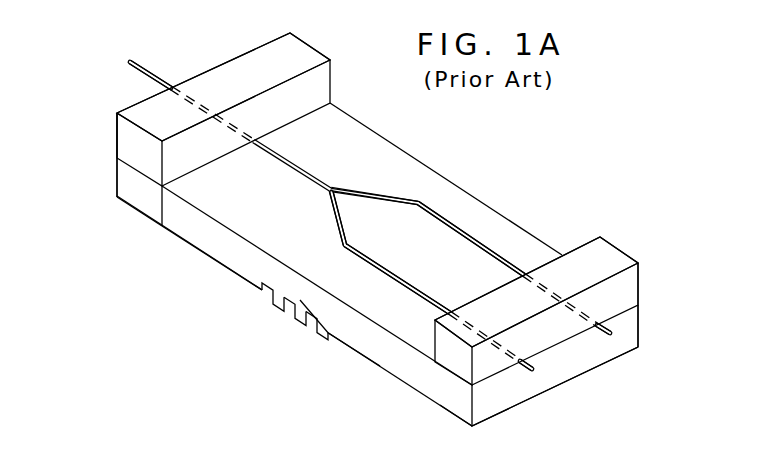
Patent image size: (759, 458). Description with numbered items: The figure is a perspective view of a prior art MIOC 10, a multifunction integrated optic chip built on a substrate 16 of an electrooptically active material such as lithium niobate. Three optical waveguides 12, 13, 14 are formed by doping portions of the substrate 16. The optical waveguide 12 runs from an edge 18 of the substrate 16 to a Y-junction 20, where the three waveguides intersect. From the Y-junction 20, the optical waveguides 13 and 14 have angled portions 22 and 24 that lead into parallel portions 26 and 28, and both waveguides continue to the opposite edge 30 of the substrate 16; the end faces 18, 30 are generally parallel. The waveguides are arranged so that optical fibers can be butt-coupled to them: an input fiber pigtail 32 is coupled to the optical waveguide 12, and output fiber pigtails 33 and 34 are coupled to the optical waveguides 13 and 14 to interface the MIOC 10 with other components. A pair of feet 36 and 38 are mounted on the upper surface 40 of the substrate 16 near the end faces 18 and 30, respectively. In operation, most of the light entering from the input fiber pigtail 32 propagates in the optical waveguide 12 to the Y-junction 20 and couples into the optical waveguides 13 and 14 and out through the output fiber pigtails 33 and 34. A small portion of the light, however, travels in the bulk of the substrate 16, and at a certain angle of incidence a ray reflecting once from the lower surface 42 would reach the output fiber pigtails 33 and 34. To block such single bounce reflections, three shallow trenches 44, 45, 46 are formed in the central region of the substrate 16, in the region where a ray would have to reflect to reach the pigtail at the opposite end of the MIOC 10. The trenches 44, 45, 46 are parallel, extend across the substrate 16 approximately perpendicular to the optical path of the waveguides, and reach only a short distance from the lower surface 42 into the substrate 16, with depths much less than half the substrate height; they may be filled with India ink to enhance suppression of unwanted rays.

The MIOC 10 is at (526, 151).
The optical waveguide 12 is at (292, 158).
The optical waveguide 13 is at (360, 263).
The optical waveguide 14 is at (472, 230).
The substrate 16 is at (193, 230).
The edge 18 is at (116, 180).
The Y-junction 20 is at (333, 186).
The angled portion 22 is at (325, 228).
The angled portion 24 is at (382, 194).
The parallel portion 26 is at (408, 296).
The parallel portion 28 is at (510, 262).
The edge 30 is at (573, 360).
The input fiber pigtail 32 is at (153, 70).
The output fiber pigtail 33 is at (518, 372).
The output fiber pigtail 34 is at (622, 318).
The foot 36 is at (308, 45).
The foot 38 is at (628, 240).
The upper surface 40 is at (202, 203).
The lower surface 42 is at (458, 427).
The trench 44 is at (273, 296).
The trench 45 is at (293, 312).
The trench 46 is at (313, 325).